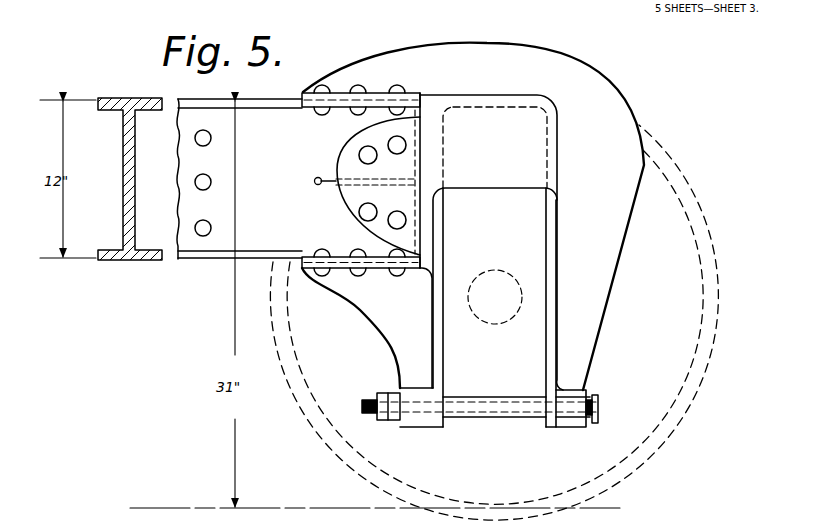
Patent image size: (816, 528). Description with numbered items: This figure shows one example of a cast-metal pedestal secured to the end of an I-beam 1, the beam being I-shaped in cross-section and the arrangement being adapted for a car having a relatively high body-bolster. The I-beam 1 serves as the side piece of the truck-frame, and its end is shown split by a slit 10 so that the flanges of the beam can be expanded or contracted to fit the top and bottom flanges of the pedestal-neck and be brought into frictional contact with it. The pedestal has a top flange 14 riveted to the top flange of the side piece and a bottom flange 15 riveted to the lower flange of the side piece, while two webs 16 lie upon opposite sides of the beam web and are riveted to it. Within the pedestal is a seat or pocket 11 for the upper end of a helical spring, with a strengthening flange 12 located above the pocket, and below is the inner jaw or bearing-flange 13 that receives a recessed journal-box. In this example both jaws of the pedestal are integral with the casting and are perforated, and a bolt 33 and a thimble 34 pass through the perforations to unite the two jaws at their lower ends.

The I-beam 1 is at (174, 181).
The slit 10 is at (319, 176).
The seat or pocket 11 is at (477, 154).
The strengthening flange 12 is at (473, 216).
The inner jaw or bearing-flange 13 is at (455, 246).
The top flange 14 is at (312, 97).
The bottom flange 15 is at (300, 266).
The web 16 is at (378, 186).
The bolt 33 is at (599, 410).
The thimble 34 is at (487, 428).